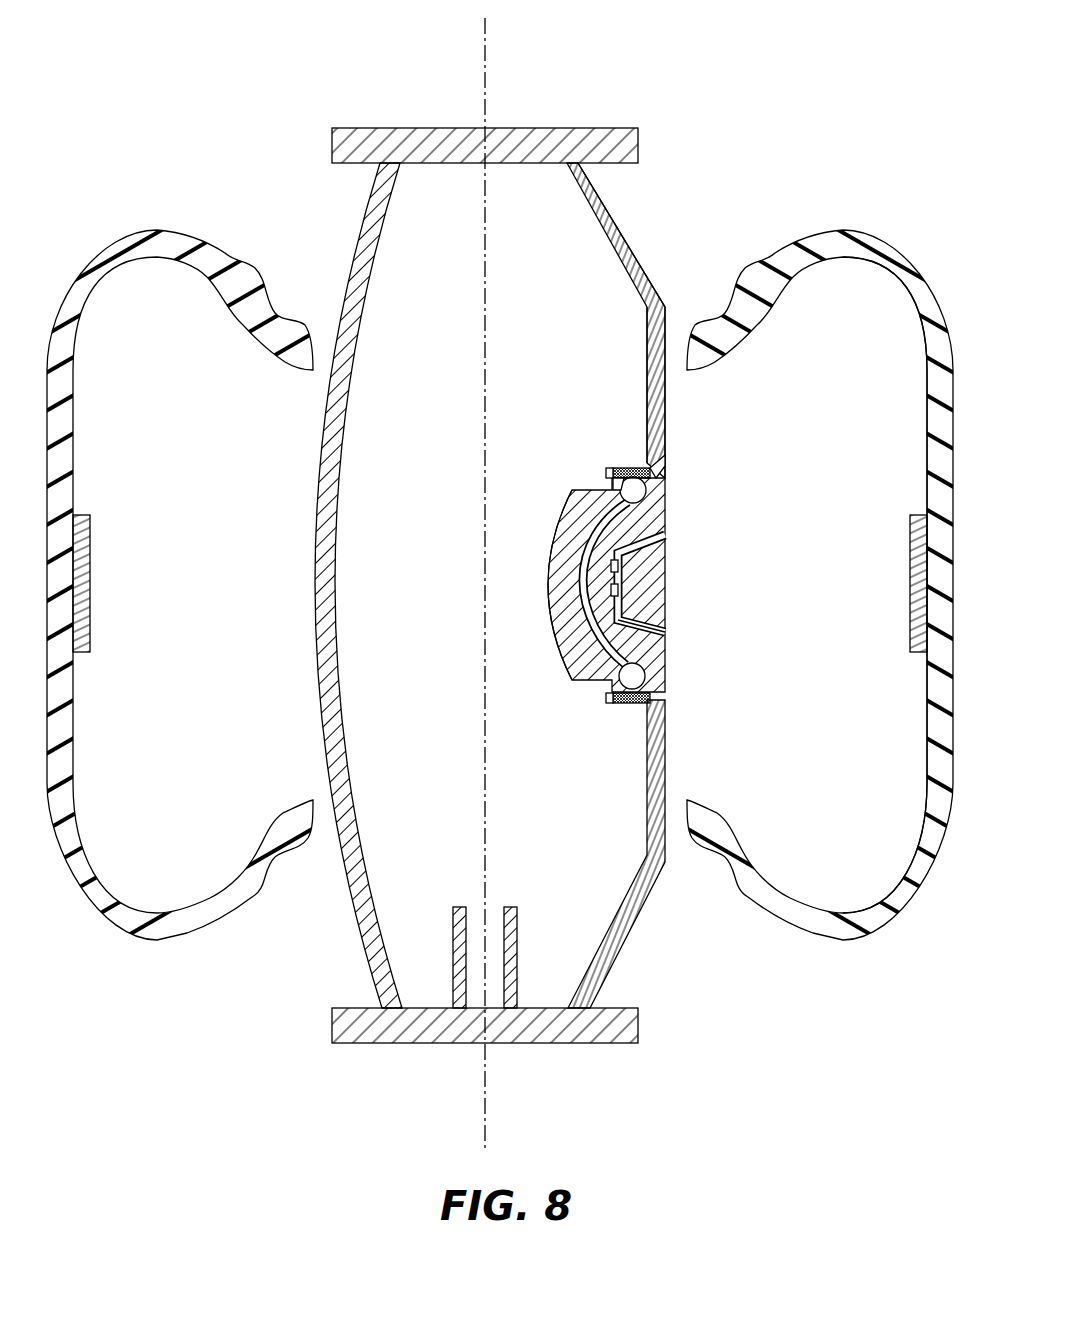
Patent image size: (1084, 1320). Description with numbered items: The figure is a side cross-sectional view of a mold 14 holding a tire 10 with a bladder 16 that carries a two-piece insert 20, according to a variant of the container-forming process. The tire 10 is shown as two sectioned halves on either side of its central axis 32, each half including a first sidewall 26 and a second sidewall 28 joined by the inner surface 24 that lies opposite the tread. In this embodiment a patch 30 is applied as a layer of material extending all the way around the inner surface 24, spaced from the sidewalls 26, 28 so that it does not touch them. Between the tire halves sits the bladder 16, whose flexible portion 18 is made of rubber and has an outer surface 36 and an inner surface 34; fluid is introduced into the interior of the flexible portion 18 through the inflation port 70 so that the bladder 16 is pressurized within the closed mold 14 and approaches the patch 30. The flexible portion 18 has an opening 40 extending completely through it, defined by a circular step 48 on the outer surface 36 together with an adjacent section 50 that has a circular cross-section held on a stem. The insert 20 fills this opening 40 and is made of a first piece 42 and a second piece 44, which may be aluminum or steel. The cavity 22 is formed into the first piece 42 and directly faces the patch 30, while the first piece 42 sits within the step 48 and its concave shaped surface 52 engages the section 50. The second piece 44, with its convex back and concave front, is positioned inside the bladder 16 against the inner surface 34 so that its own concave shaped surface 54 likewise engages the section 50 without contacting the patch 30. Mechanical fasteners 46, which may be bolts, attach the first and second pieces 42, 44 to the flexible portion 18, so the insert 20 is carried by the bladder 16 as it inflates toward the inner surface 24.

The tire 10 is at (845, 232).
The mold 14 is at (668, 172).
The bladder 16 is at (338, 575).
The flexible portion 18 is at (647, 385).
The insert 20 is at (548, 586).
The cavity 22 is at (664, 540).
The inner surface 24 is at (922, 478).
The first sidewall 26 is at (847, 259).
The second sidewall 28 is at (847, 913).
The patch 30 is at (912, 582).
The axis 32 is at (485, 72).
The inner surface 34 is at (624, 272).
The outer surface 36 is at (649, 271).
The opening 40 is at (665, 594).
The first piece 42 is at (665, 583).
The second piece 44 is at (560, 512).
The mechanical fasteners 46 is at (610, 470).
The step 48 is at (656, 468).
The section 50 is at (645, 675).
The concave shaped surface 52 is at (645, 490).
The concave shaped surface 54 is at (610, 488).
The inflation port 70 is at (517, 940).